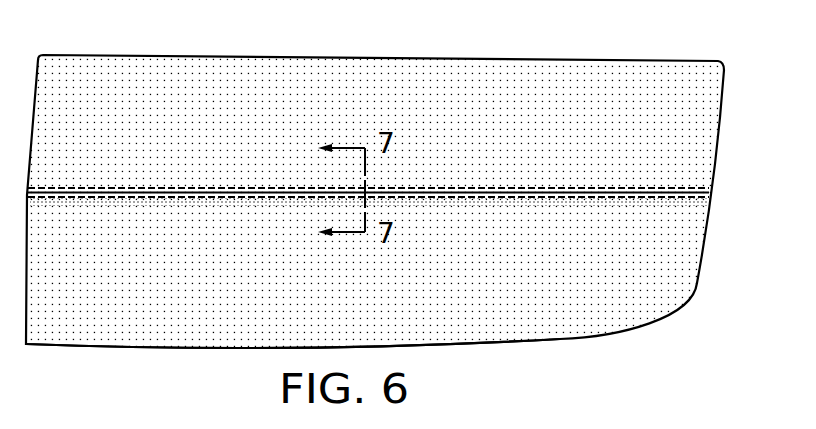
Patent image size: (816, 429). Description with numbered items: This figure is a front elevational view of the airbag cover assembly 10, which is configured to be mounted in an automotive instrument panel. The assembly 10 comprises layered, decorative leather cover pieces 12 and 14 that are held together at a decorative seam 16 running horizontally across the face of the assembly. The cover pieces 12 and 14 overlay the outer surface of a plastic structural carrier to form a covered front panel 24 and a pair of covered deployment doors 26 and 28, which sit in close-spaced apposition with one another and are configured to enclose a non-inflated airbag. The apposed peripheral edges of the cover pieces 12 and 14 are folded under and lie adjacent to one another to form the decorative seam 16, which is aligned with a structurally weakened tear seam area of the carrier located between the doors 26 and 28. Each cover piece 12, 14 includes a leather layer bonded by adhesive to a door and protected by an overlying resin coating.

The airbag cover assembly 10 is at (533, 60).
The cover piece 12 is at (601, 88).
The cover piece 14 is at (634, 303).
The decorative seam 16 is at (679, 190).
The covered front panel 24 is at (147, 77).
The covered deployment door 26 is at (412, 77).
The covered deployment door 28 is at (570, 330).